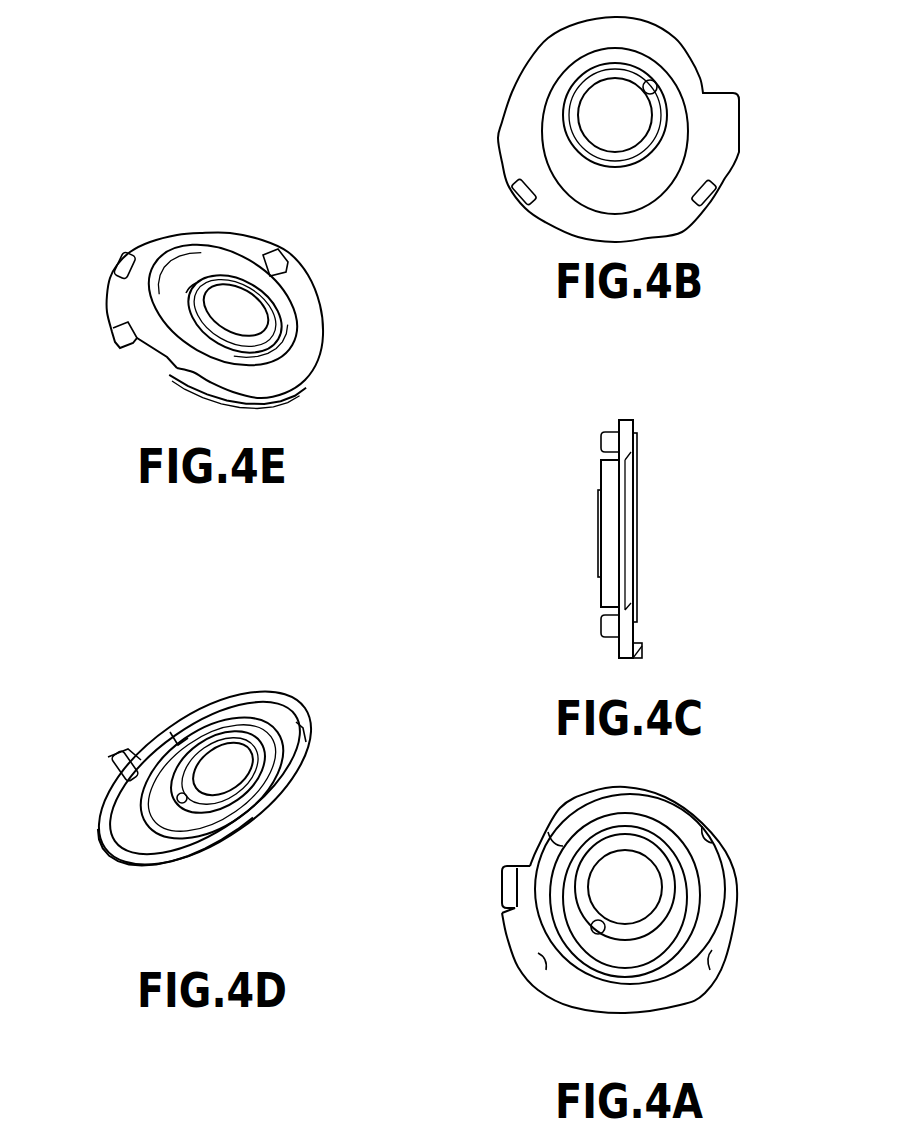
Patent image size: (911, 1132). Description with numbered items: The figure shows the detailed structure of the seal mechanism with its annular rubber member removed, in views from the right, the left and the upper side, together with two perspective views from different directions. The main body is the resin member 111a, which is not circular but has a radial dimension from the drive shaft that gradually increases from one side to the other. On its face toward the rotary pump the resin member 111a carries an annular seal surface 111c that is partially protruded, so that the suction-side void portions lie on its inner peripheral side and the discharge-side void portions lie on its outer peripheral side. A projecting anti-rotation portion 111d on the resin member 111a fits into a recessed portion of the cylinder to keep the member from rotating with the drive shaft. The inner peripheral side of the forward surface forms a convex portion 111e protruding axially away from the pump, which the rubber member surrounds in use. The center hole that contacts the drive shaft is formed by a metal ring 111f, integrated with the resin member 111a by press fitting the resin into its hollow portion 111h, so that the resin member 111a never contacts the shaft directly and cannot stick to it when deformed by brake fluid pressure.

In FIG. 4B, the resin member 111a is at (492, 148).
In FIG. 4E, the resin member 111a is at (333, 350).
In FIG. 4C, the resin member 111a is at (627, 416).
In FIG. 4D, the resin member 111a is at (313, 708).
In FIG. 4A, the resin member 111a is at (748, 897).
In FIG. 4D, the annular seal surface 111c is at (285, 773).
In FIG. 4A, the annular seal surface 111c is at (695, 858).
In FIG. 4C, the anti-rotation portion 111d is at (643, 650).
In FIG. 4D, the anti-rotation portion 111d is at (125, 774).
In FIG. 4A, the anti-rotation portion 111d is at (508, 872).
In FIG. 4B, the convex portion 111e is at (543, 120).
In FIG. 4E, the convex portion 111e is at (293, 315).
In FIG. 4D, the convex portion 111e is at (212, 778).
In FIG. 4A, the convex portion 111e is at (625, 895).
In FIG. 4B, the metal ring 111f is at (583, 90).
In FIG. 4E, the metal ring 111f is at (263, 333).
In FIG. 4D, the metal ring 111f is at (207, 800).
In FIG. 4A, the metal ring 111f is at (655, 913).
In FIG. 4B, the hollow portion 111h is at (655, 82).
In FIG. 4E, the hollow portion 111h is at (192, 292).
In FIG. 4D, the hollow portion 111h is at (186, 804).
In FIG. 4A, the hollow portion 111h is at (592, 925).